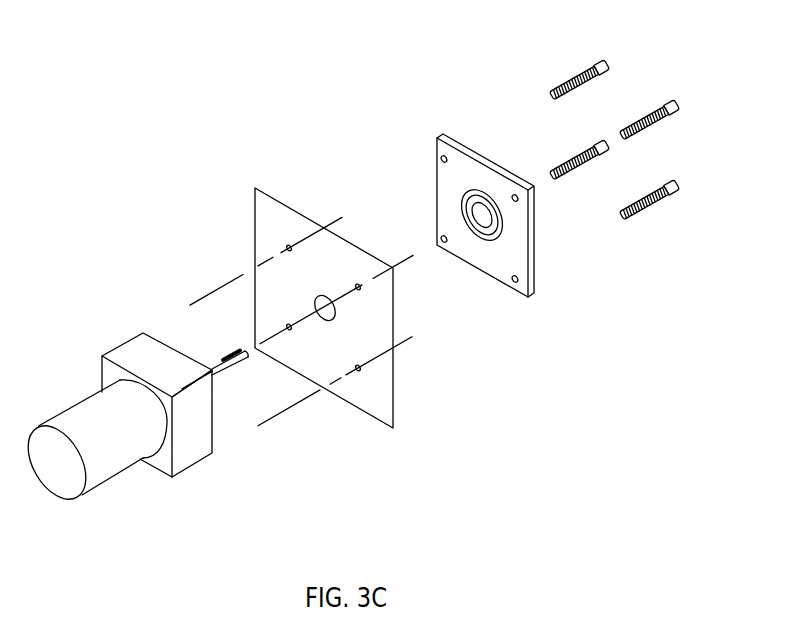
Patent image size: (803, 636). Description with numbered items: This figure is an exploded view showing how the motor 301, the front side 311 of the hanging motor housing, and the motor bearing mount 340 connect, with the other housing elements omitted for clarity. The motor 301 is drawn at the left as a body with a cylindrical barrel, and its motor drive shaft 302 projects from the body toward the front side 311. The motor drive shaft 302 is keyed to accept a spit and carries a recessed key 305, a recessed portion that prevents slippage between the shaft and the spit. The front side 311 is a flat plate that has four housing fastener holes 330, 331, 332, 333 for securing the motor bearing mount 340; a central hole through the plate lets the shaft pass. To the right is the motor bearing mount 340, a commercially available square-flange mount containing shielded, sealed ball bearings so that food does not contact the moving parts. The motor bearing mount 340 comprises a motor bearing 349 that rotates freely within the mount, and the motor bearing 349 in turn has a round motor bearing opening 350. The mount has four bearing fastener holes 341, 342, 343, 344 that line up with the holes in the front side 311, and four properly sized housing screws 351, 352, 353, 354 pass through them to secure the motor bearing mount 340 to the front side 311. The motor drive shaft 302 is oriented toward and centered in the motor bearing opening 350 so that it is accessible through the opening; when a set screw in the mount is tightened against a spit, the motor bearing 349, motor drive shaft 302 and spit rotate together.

The motor 301 is at (128, 360).
The motor drive shaft 302 is at (236, 366).
The recessed key 305 is at (238, 355).
The front side 311 is at (290, 206).
The housing fastener hole 330 is at (289, 327).
The housing fastener hole 331 is at (289, 248).
The housing fastener hole 332 is at (360, 289).
The housing fastener hole 333 is at (358, 370).
The motor bearing mount 340 is at (487, 158).
The bearing fastener hole 341 is at (443, 158).
The bearing fastener hole 342 is at (517, 201).
The bearing fastener hole 343 is at (517, 280).
The bearing fastener hole 344 is at (443, 238).
The motor bearing 349 is at (483, 237).
The motor bearing opening 350 is at (478, 217).
The housing screw 351 is at (604, 62).
The housing screw 352 is at (673, 106).
The housing screw 353 is at (673, 186).
The housing screw 354 is at (572, 170).